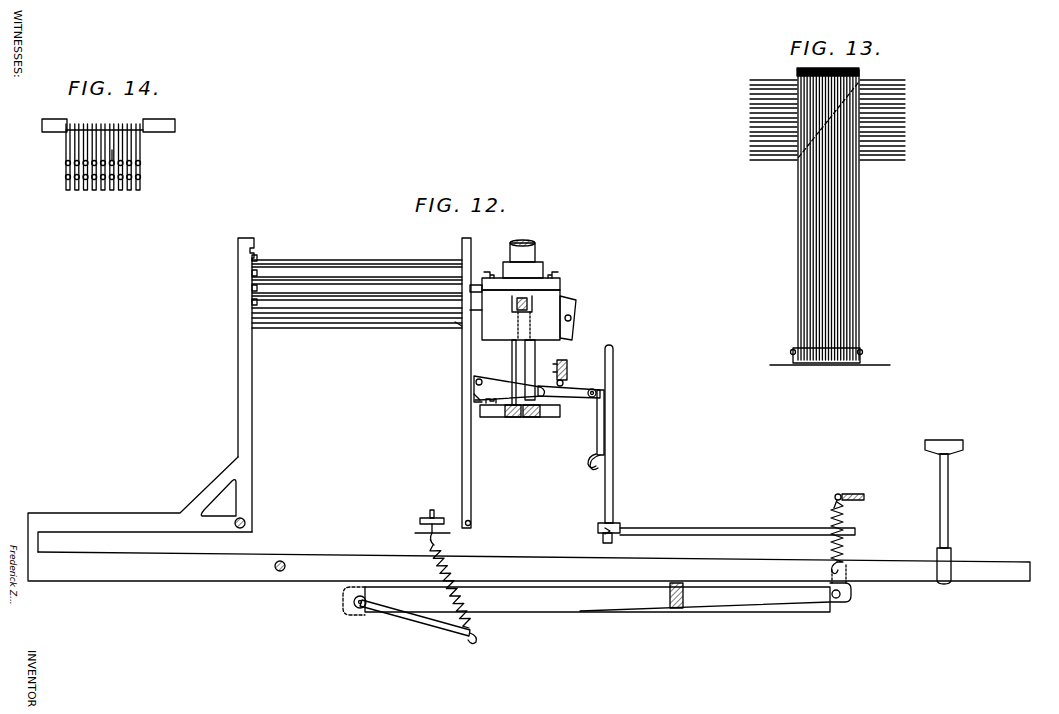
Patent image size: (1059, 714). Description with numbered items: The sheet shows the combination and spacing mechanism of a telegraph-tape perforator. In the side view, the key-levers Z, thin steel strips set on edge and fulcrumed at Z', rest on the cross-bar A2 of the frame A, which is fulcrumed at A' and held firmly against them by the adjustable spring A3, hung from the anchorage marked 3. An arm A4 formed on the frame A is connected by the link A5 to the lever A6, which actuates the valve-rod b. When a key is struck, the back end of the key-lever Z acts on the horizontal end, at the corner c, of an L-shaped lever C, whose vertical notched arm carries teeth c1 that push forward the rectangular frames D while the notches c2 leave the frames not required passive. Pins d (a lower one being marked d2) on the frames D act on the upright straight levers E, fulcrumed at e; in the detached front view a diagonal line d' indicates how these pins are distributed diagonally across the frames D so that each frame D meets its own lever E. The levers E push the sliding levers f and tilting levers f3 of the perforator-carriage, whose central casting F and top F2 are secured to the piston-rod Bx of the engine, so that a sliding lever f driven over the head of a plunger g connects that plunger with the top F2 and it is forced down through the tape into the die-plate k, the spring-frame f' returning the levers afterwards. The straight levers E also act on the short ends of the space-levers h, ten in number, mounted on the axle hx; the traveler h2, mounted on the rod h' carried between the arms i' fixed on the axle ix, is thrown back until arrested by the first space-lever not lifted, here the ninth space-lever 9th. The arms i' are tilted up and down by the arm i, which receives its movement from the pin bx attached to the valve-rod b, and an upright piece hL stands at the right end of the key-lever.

In FIG. 14, the horizontal axle hx is at (42, 126).
In FIG. 14, the space-lever h is at (96, 170).
In FIG. 14, the ninth space-lever 9th is at (130, 155).
In FIG. 13, the rectangular frame D is at (905, 122).
In FIG. 12, the rectangular frame D is at (356, 262).
In FIG. 13, the straight lever E is at (858, 220).
In FIG. 12, the straight lever E is at (470, 400).
In FIG. 13, the diagonal guide d' is at (840, 131).
In FIG. 13, the fulcrum e is at (791, 352).
In FIG. 12, the fulcrum e is at (471, 522).
In FIG. 12, the L-shaped lever C is at (247, 286).
In FIG. 12, the frame bolt c is at (246, 521).
In FIG. 12, the tooth c1 is at (256, 260).
In FIG. 12, the notch c2 is at (250, 262).
In FIG. 12, the pin d is at (453, 381).
In FIG. 12, the thread guide d2 is at (460, 328).
In FIG. 12, the sliding lever f is at (461, 348).
In FIG. 12, the piston-rod Bx is at (536, 256).
In FIG. 12, the top cover F2 is at (530, 284).
In FIG. 12, the central casting F is at (521, 315).
In FIG. 12, the spring-frame f' is at (529, 295).
In FIG. 12, the tilting lever f3 is at (572, 316).
In FIG. 12, the plunger g is at (512, 350).
In FIG. 12, the traveler h2 is at (512, 418).
In FIG. 12, the rod h' is at (537, 427).
In FIG. 12, the guide-plate of the die k is at (558, 380).
In FIG. 12, the arm i' is at (569, 371).
In FIG. 12, the axle ix is at (590, 397).
In FIG. 12, the arm i is at (609, 430).
In FIG. 12, the valve-rod b is at (614, 372).
In FIG. 12, the pin bx is at (596, 466).
In FIG. 12, the lever A6 is at (735, 532).
In FIG. 12, the link A5 is at (846, 555).
In FIG. 12, the T handle hL is at (948, 494).
In FIG. 12, the key-lever Z is at (529, 568).
In FIG. 12, the fulcrum Z' is at (276, 584).
In FIG. 12, the eye bolt 3 is at (416, 534).
In FIG. 12, the frame A is at (586, 574).
In FIG. 12, the arm A4 is at (738, 603).
In FIG. 12, the cross-bar A2 is at (673, 610).
In FIG. 12, the fulcrum A' is at (418, 624).
In FIG. 12, the adjustable spring A3 is at (470, 622).